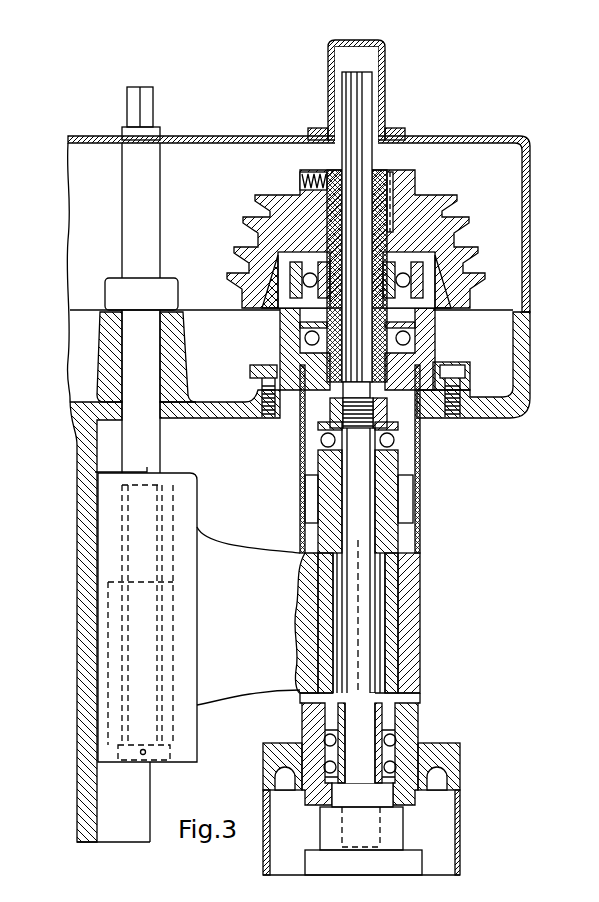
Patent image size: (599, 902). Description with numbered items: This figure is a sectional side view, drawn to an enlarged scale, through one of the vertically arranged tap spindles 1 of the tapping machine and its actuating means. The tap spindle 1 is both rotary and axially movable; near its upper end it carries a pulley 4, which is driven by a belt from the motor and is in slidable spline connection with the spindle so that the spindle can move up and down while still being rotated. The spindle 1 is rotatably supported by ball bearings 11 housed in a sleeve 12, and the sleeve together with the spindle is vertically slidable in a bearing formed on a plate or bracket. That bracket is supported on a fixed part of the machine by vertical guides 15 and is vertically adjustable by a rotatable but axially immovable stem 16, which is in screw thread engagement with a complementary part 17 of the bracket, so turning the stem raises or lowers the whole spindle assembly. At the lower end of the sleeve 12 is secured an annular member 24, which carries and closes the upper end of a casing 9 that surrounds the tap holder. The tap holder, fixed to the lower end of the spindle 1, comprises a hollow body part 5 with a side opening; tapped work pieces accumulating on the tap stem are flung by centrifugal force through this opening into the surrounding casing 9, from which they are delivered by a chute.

The tap spindle 1 is at (188, 510).
The pulley 4 is at (430, 205).
The hollow body part 5 is at (415, 862).
The casing 9 is at (460, 862).
The ball bearing 11 is at (420, 448).
The sleeve 12 is at (392, 620).
The vertical guide 15 is at (148, 463).
The stem 16 is at (146, 106).
The complementary part 17 is at (137, 590).
The annular member 24 is at (462, 757).